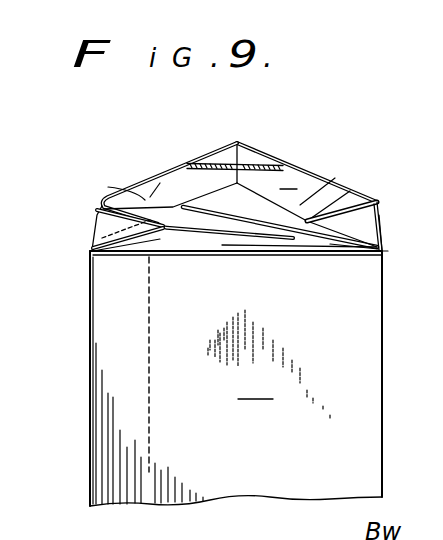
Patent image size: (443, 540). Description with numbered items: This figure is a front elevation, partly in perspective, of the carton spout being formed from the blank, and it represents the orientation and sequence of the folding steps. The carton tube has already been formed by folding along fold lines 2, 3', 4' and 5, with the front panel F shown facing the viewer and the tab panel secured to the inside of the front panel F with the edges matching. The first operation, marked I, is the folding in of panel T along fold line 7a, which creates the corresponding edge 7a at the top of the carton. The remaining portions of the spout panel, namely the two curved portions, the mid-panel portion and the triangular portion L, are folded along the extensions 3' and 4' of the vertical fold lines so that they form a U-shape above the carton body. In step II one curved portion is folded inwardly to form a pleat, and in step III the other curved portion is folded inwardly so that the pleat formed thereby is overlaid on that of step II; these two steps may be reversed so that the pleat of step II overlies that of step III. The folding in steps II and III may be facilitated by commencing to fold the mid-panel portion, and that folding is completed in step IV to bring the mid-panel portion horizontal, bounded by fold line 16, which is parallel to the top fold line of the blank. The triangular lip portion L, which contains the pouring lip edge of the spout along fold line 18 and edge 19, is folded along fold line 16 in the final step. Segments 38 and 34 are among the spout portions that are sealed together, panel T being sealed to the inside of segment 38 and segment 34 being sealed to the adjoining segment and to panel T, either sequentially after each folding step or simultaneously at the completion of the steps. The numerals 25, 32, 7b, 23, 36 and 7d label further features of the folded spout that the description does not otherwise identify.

The fold line 2 is at (385, 325).
The fold line 5 is at (90, 340).
The fold line 18 is at (250, 166).
The edge 19 is at (153, 180).
The rear edge member 25 is at (165, 187).
The fold line 16 is at (117, 184).
The extension of vertical fold line 4' is at (80, 215).
The left strut 32 is at (107, 223).
The lower left strip 7b is at (97, 247).
The portion 34 is at (147, 239).
The right panel brace 23 is at (300, 205).
The extension of vertical fold line 3' is at (396, 218).
The right strut 36 is at (362, 227).
The right corner strip 7d is at (388, 253).
The portion 38 is at (337, 255).
The fold line 7a is at (297, 255).
The spout fold sequence step I is at (250, 248).
The folding step II is at (171, 238).
The folding step III is at (280, 221).
The folding step IV is at (170, 192).
The triangular portion L is at (293, 197).
The front panel F is at (255, 388).